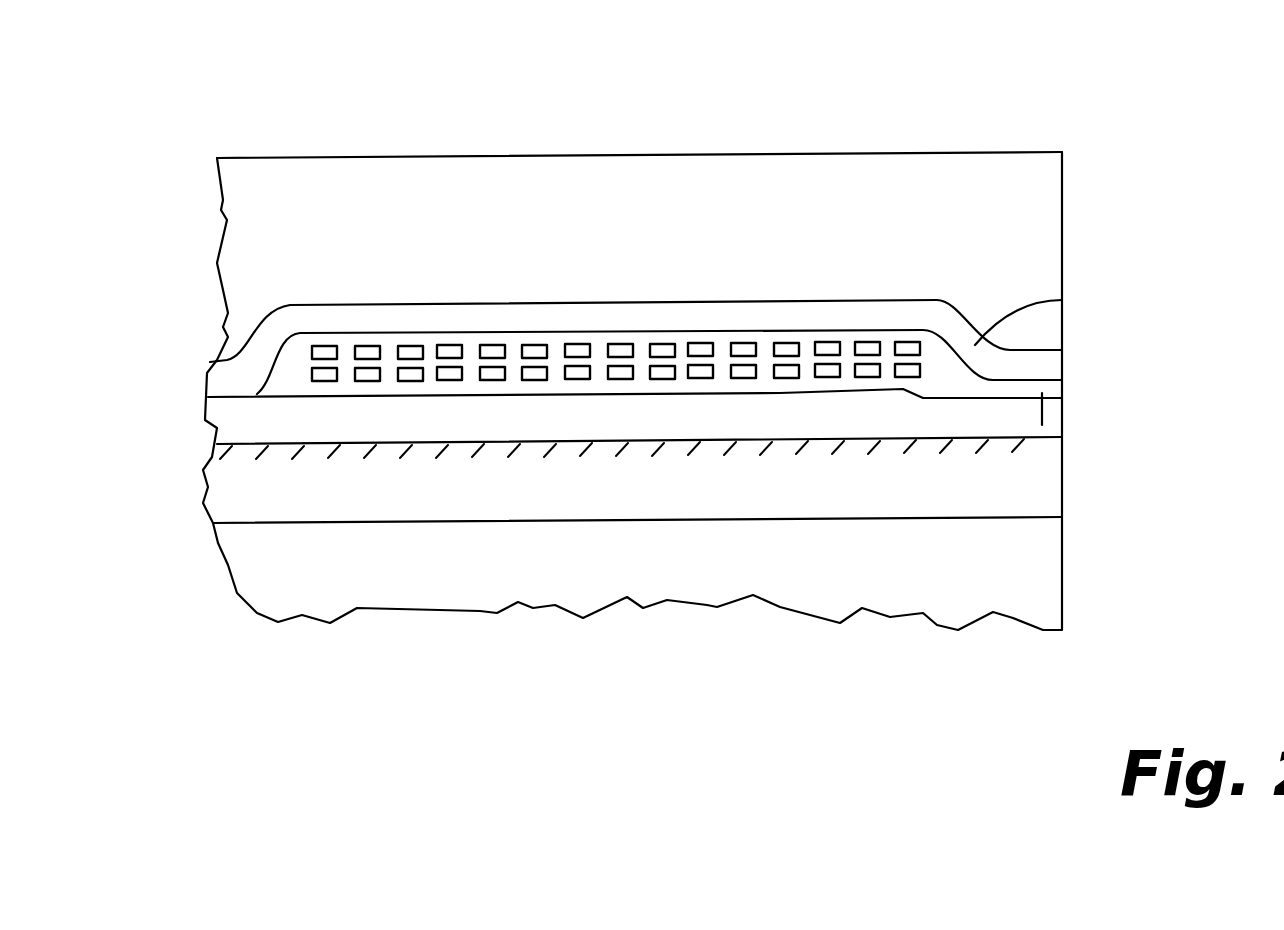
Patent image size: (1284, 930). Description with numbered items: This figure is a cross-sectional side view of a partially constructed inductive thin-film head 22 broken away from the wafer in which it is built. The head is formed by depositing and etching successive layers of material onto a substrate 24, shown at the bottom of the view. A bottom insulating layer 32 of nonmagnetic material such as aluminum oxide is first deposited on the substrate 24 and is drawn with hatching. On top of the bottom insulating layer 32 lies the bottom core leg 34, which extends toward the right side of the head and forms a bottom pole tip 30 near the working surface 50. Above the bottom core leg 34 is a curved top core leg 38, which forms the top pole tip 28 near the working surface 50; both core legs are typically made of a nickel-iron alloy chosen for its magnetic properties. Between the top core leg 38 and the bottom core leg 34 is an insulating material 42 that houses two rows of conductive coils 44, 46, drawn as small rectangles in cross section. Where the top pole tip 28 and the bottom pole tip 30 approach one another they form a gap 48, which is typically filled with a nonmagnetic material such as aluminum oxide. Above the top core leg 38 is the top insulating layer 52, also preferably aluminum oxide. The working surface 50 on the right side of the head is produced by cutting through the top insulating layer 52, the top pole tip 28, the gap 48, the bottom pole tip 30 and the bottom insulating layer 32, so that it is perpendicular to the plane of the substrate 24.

The inductive thin-film head 22 is at (1062, 105).
The substrate 24 is at (245, 548).
The top pole tip 28 is at (1062, 300).
The bottom pole tip 30 is at (970, 418).
The bottom insulating layer 32 is at (225, 473).
The bottom core leg 34 is at (232, 411).
The top core leg 38 is at (898, 310).
The insulating material 42 is at (616, 234).
The conductive coil 44 is at (662, 352).
The conductive coil 46 is at (783, 372).
The gap 48 is at (1042, 425).
The working surface 50 is at (1105, 406).
The top insulating layer 52 is at (330, 181).